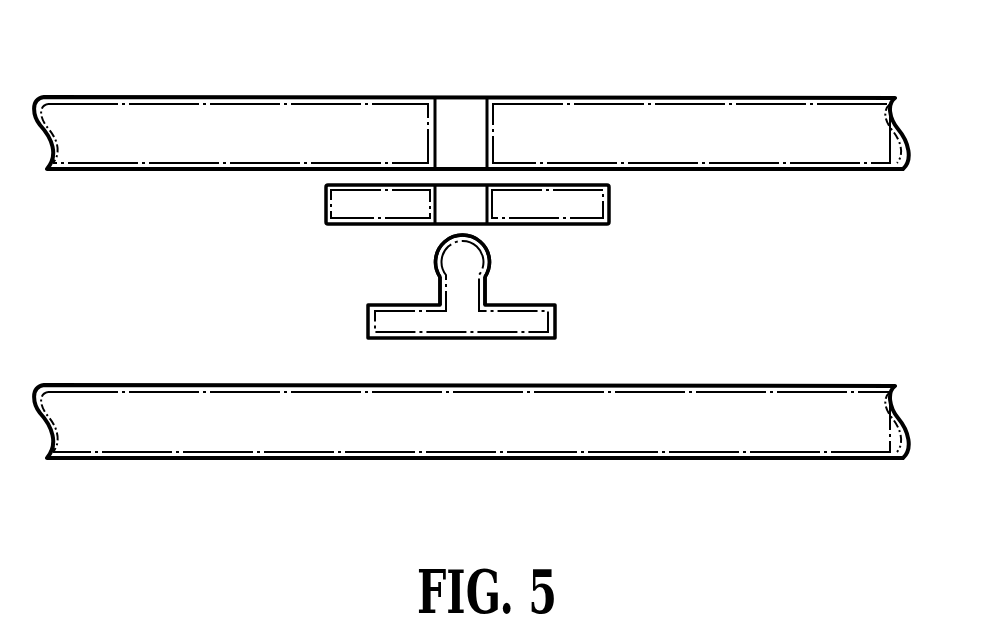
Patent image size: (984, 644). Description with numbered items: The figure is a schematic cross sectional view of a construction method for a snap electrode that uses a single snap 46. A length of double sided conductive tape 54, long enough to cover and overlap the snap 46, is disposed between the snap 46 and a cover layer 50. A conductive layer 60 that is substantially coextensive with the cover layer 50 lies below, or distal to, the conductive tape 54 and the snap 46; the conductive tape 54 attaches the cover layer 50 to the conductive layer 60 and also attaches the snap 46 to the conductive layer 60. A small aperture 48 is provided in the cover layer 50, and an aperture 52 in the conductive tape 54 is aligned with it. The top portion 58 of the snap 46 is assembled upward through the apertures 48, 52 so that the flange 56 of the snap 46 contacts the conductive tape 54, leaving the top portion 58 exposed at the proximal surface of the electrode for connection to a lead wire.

The snap 46 is at (533, 320).
The small aperture 48 is at (460, 120).
The cover layer 50 is at (858, 123).
The aperture 52 is at (445, 213).
The conductive tape 54 is at (592, 205).
The flange 56 is at (522, 303).
The top portion 58 is at (455, 258).
The conductive layer 60 is at (845, 412).